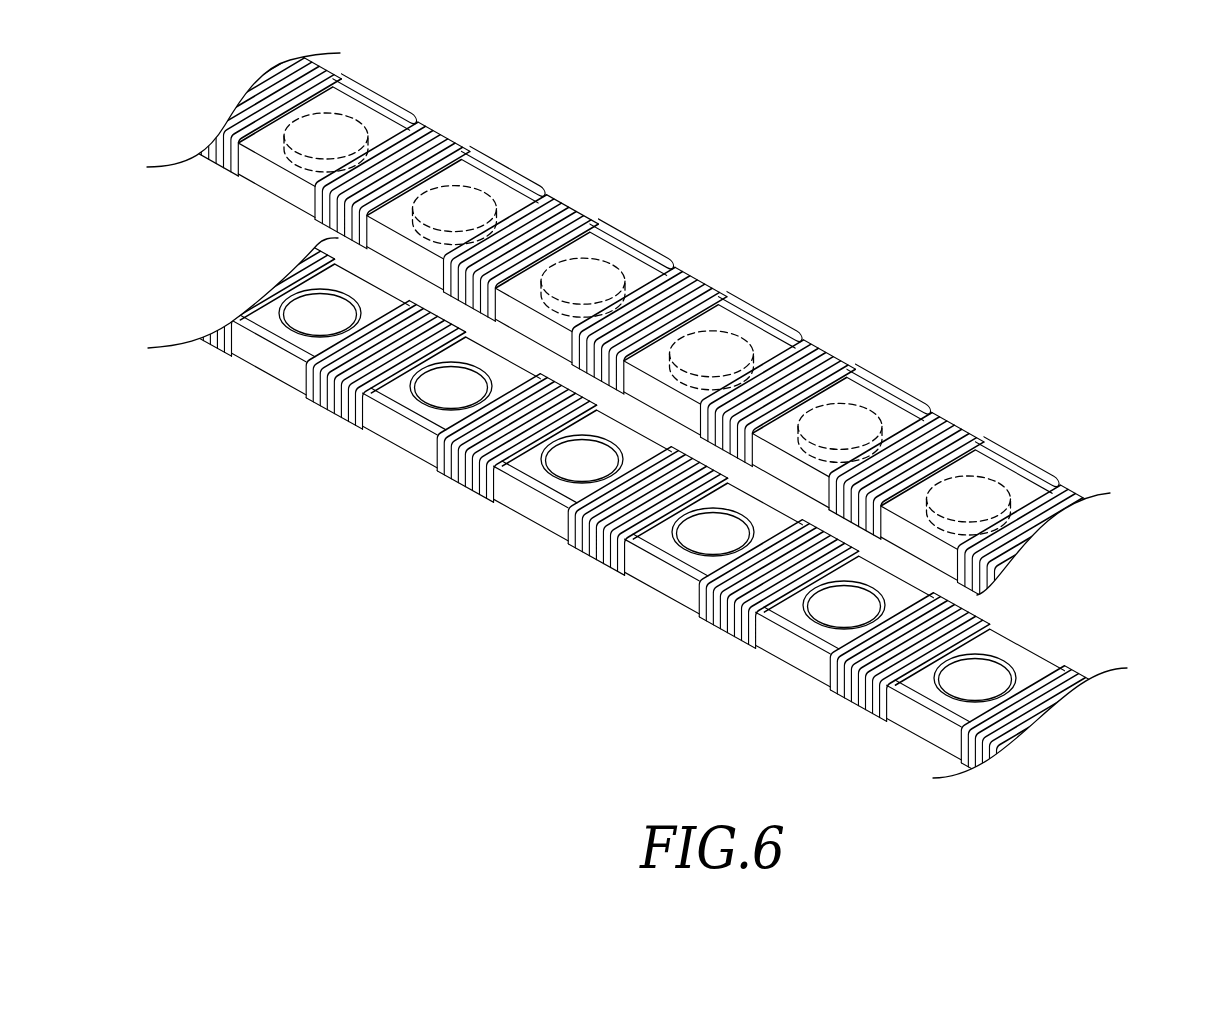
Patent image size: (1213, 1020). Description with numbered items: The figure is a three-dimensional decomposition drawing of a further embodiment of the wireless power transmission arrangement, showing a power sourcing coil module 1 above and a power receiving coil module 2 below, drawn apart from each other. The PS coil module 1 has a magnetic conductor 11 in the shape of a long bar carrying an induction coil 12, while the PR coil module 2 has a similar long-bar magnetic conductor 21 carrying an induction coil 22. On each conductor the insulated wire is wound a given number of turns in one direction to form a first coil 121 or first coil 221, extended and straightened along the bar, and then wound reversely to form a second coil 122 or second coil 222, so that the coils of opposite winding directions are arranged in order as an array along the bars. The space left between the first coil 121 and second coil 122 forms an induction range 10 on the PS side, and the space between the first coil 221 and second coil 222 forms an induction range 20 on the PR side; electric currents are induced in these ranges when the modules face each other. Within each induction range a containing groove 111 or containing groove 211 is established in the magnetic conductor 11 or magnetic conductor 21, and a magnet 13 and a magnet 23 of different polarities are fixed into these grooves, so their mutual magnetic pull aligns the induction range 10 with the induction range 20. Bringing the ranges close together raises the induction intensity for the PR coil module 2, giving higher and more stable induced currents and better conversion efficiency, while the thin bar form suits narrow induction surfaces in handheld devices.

The power sourcing coil module 1 is at (617, 492).
The induction range 10 is at (613, 492).
The magnetic conductor 11 is at (582, 489).
The containing groove 111 is at (950, 703).
The induction coil 12 is at (648, 511).
The first coil 121 is at (343, 400).
The second coil 122 is at (463, 472).
The magnet 13 is at (977, 686).
The power receiving coil module 2 is at (636, 335).
The induction range 20 is at (627, 335).
The magnetic conductor 21 is at (627, 319).
The containing groove 211 is at (980, 503).
The induction coil 22 is at (649, 335).
The first coil 221 is at (438, 132).
The second coil 222 is at (560, 207).
The magnet 23 is at (1005, 495).